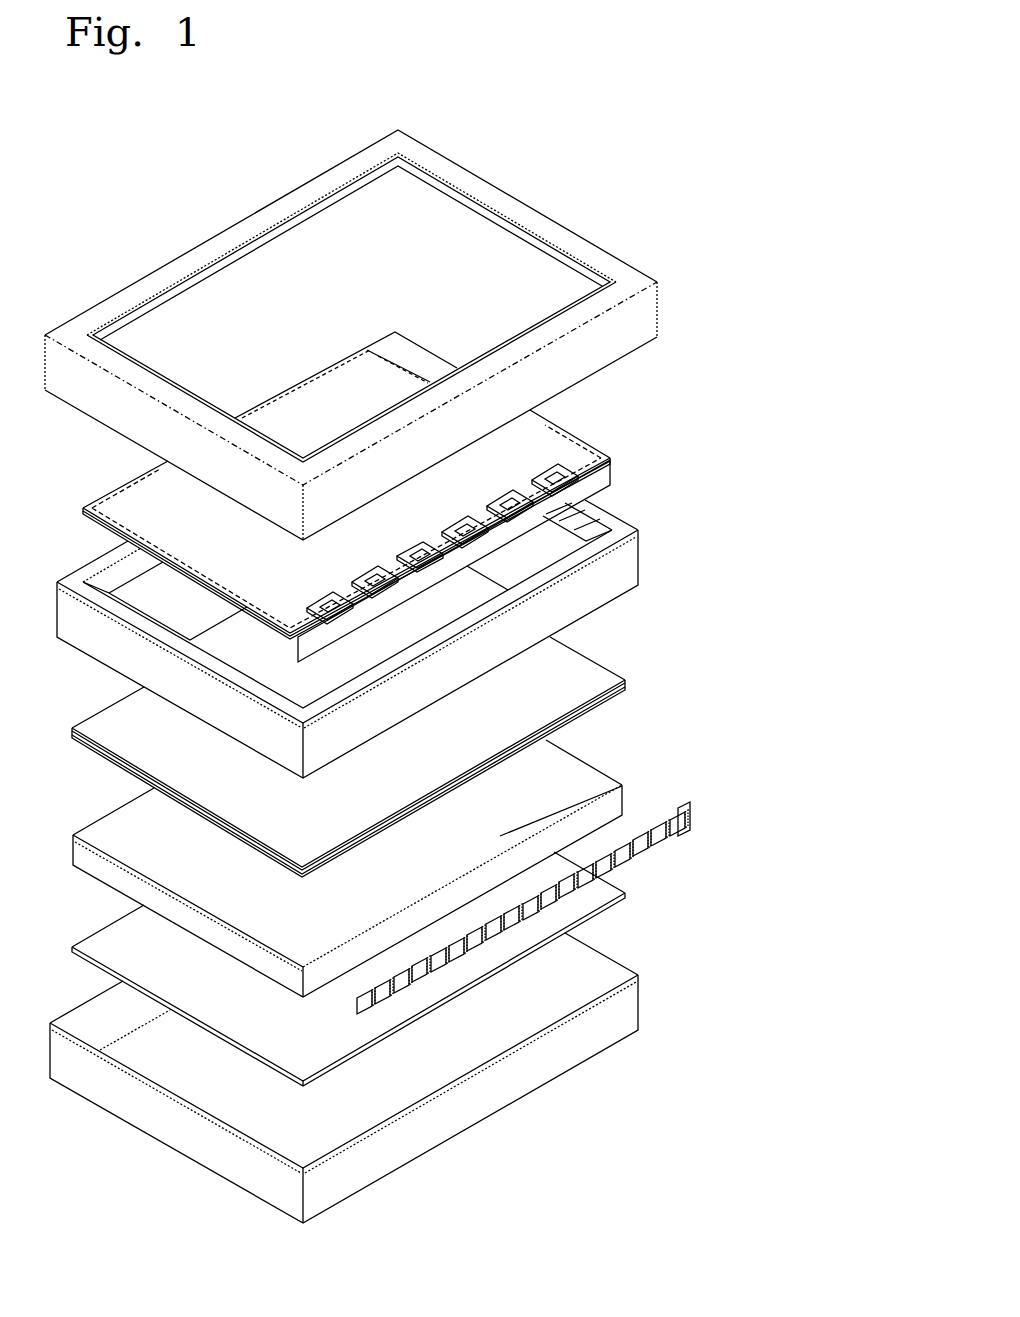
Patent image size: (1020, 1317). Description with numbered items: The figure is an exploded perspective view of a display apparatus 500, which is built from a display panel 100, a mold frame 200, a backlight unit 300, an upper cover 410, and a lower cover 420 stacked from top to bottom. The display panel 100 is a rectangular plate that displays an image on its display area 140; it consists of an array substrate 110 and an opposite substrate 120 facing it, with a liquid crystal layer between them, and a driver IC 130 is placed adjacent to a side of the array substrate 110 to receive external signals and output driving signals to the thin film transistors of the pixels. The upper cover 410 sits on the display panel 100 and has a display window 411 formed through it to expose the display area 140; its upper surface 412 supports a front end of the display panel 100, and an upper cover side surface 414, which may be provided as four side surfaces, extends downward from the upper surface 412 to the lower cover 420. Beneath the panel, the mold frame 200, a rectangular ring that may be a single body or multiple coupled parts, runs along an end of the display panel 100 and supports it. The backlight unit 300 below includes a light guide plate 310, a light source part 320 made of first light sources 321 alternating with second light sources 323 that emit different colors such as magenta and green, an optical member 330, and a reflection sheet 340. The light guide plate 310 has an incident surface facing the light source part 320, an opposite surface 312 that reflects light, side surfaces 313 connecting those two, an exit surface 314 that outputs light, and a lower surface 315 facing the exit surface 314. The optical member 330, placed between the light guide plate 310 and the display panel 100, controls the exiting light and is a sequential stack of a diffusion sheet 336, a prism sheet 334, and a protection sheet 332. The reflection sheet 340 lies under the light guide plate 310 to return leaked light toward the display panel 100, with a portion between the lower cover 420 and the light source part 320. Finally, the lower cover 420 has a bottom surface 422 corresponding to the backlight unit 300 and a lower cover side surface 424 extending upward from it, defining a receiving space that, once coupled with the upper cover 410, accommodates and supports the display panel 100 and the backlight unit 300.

The display apparatus 500 is at (600, 123).
The upper cover 410 is at (385, 330).
The display window 411 is at (268, 278).
The upper surface 412 is at (568, 248).
The upper cover side surface 414 is at (648, 316).
The display panel 100 is at (378, 524).
The array substrate 110 is at (568, 442).
The opposite substrate 120 is at (537, 432).
The driver integrated circuit 130 is at (612, 471).
The display area 140 is at (114, 488).
The mold frame 200 is at (635, 566).
The backlight unit 300 is at (808, 668).
The optical member 330 is at (417, 757).
The protection sheet 332 is at (627, 681).
The prism sheet 334 is at (627, 685).
The diffusion sheet 336 is at (390, 782).
The light guide plate 310 is at (399, 956).
The opposite surface 312 is at (100, 818).
The side surfaces 313 is at (120, 880).
The exit surface 314 is at (578, 776).
The lower surface 315 is at (235, 952).
The light source part 320 is at (585, 979).
The first light sources 321 is at (672, 838).
The second light sources 323 is at (684, 823).
The reflection sheet 340 is at (600, 878).
The lower cover 420 is at (387, 1083).
The bottom surface 422 is at (476, 1040).
The lower cover side surface 424 is at (642, 1013).